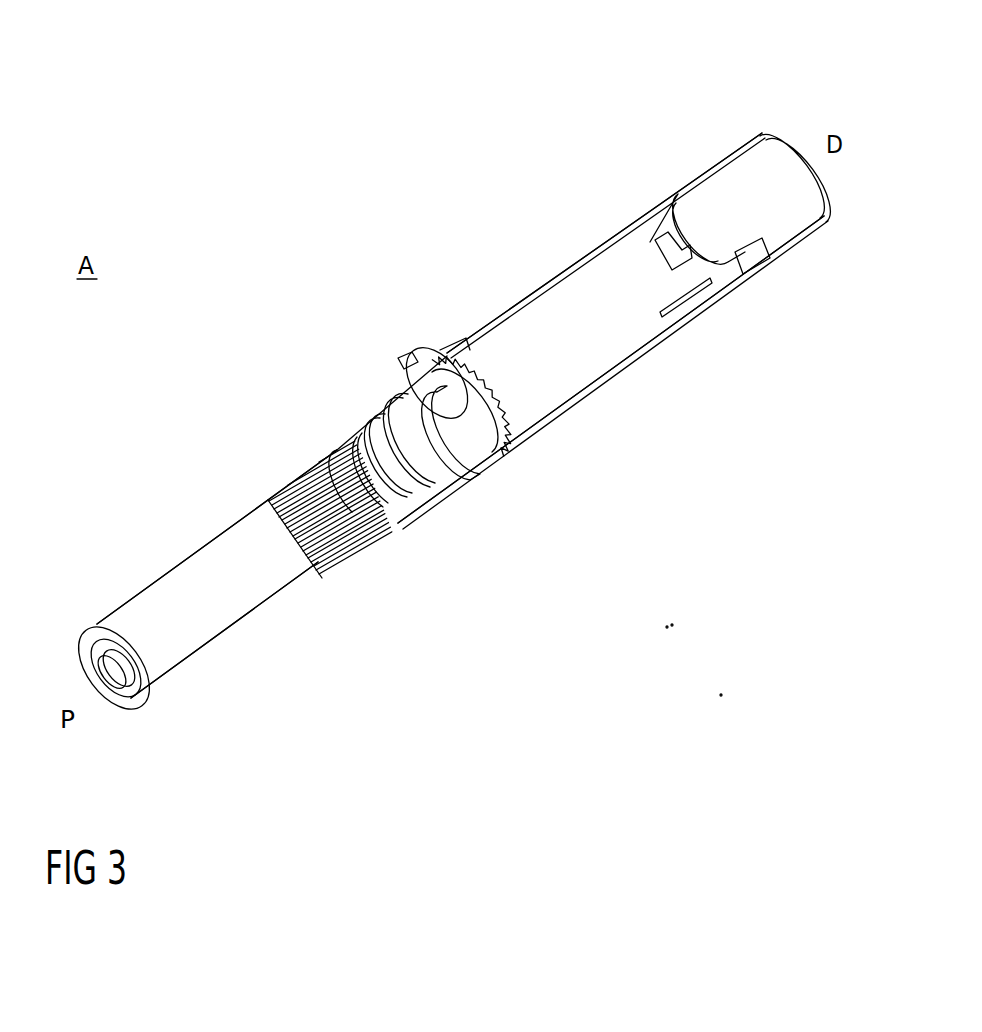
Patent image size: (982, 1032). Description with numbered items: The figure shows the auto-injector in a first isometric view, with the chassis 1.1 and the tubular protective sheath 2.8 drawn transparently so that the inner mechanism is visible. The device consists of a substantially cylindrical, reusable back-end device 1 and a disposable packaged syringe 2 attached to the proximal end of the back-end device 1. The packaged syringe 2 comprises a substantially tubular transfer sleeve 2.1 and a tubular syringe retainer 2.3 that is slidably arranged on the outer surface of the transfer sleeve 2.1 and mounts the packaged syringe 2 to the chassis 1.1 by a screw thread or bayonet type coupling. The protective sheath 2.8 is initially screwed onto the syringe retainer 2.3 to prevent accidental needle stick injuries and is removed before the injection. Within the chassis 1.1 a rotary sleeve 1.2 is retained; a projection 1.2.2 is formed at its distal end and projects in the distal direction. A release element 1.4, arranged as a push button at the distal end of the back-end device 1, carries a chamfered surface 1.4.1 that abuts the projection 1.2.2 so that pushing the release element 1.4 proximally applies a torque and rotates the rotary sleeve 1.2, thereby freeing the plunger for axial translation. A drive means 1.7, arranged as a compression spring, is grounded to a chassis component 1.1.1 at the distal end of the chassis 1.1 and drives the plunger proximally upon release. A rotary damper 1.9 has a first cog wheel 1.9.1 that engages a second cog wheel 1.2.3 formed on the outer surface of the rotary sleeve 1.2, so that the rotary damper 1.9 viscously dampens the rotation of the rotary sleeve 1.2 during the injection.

The back-end device 1 is at (542, 244).
The chassis 1.1 is at (672, 343).
The chassis component 1.1.1 is at (690, 200).
The rotary sleeve 1.2 is at (568, 377).
The projection 1.2.2 is at (692, 263).
The second cog wheel 1.2.3 is at (405, 377).
The release element 1.4 is at (783, 160).
The chamfered surface 1.4.1 is at (765, 258).
The drive means 1.7 is at (668, 215).
The rotary damper 1.9 is at (490, 440).
The first cog wheel 1.9.1 is at (455, 358).
The packaged syringe 2 is at (196, 505).
The transfer sleeve 2.1 is at (248, 575).
The syringe retainer 2.3 is at (415, 495).
The protective sheath 2.8 is at (187, 667).